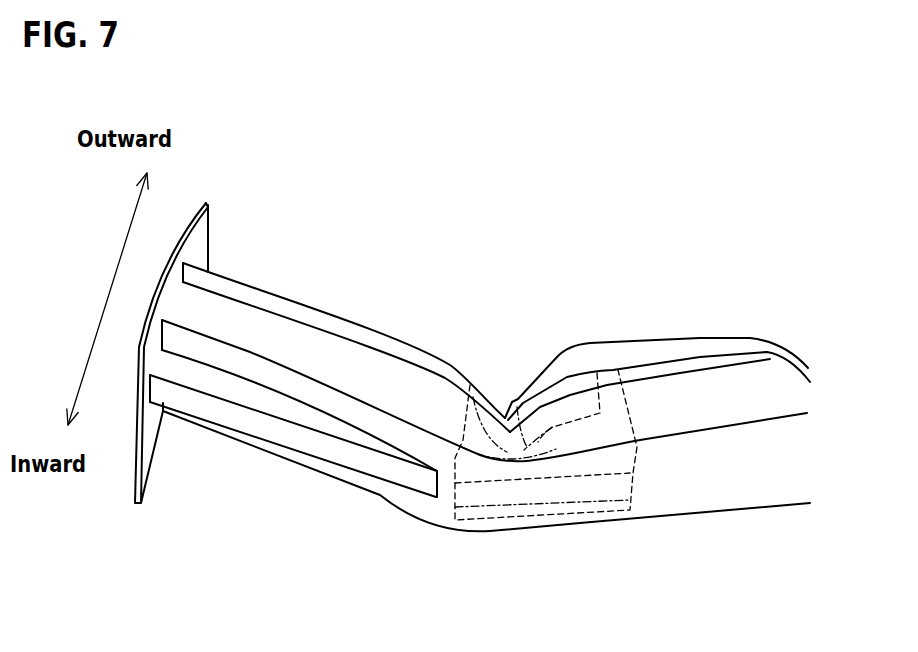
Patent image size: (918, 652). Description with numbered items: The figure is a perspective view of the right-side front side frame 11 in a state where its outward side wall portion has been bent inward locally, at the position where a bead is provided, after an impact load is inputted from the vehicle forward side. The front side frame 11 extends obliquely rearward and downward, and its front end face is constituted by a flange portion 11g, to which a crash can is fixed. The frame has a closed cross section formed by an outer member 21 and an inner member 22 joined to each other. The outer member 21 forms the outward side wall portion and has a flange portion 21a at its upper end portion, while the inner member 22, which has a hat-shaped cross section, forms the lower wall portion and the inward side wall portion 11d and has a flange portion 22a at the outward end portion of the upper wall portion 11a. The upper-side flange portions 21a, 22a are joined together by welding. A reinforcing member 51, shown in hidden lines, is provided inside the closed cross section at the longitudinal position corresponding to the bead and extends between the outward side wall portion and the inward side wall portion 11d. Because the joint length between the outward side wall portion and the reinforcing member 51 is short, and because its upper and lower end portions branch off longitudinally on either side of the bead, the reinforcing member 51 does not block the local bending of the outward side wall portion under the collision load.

The front side frame 11 is at (378, 316).
The upper wall portion 11a is at (283, 333).
The flange portion 11g is at (208, 233).
The inward side wall portion 11d is at (688, 488).
The outer member 21 is at (640, 395).
The flange portion 21a is at (622, 362).
The inner member 22 is at (758, 472).
The flange portion 22a is at (722, 385).
The reinforcing member 51 is at (572, 495).